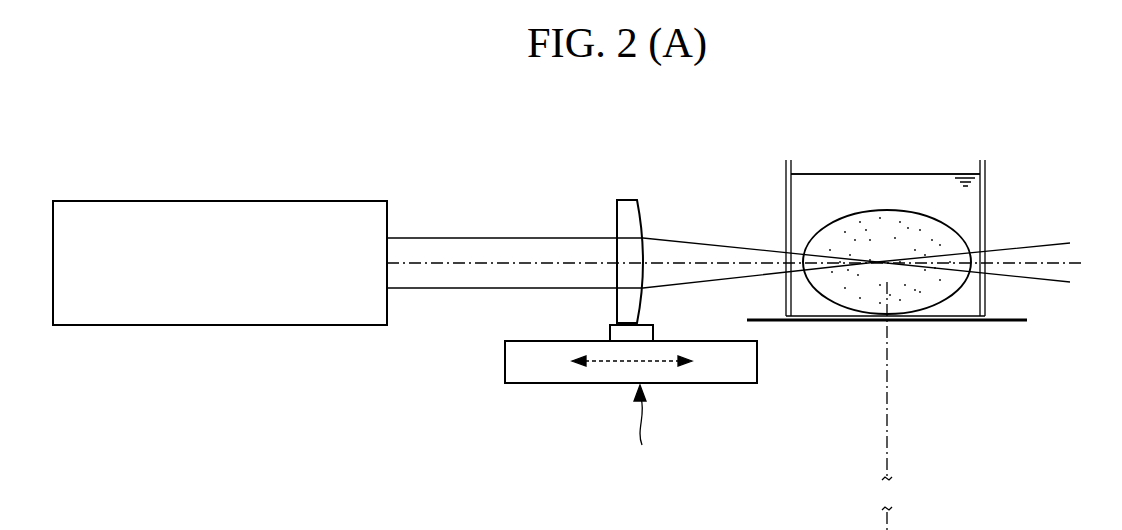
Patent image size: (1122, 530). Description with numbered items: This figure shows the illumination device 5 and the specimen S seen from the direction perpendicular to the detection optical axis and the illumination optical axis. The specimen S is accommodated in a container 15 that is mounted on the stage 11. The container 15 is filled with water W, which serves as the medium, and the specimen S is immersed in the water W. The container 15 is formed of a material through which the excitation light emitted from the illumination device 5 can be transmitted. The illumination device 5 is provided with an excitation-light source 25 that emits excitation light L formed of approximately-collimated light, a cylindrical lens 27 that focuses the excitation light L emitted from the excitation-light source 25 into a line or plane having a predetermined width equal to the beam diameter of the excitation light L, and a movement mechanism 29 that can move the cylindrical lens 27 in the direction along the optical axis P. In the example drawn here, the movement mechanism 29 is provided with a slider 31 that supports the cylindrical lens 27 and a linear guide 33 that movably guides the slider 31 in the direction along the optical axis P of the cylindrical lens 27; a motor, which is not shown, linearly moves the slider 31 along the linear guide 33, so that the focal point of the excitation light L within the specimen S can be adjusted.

The illumination device 5 is at (745, 148).
The stage 11 is at (1000, 322).
The container 15 is at (986, 178).
The excitation-light source 25 is at (210, 201).
The cylindrical lens 27 is at (622, 200).
The movement mechanism 29 is at (643, 433).
The slider 31 is at (655, 333).
The linear guide 33 is at (709, 385).
The excitation light L is at (471, 238).
The optical axis P is at (745, 389).
The specimen S is at (950, 240).
The water W is at (808, 196).